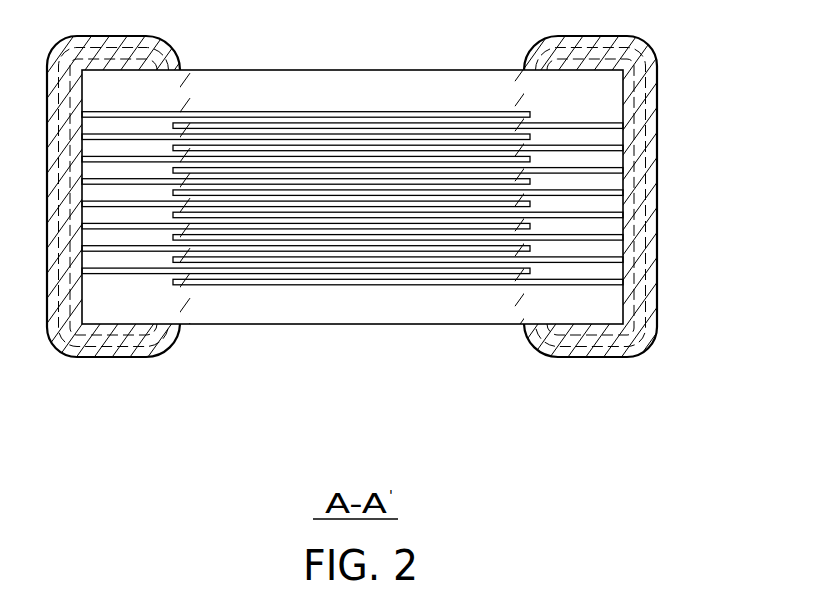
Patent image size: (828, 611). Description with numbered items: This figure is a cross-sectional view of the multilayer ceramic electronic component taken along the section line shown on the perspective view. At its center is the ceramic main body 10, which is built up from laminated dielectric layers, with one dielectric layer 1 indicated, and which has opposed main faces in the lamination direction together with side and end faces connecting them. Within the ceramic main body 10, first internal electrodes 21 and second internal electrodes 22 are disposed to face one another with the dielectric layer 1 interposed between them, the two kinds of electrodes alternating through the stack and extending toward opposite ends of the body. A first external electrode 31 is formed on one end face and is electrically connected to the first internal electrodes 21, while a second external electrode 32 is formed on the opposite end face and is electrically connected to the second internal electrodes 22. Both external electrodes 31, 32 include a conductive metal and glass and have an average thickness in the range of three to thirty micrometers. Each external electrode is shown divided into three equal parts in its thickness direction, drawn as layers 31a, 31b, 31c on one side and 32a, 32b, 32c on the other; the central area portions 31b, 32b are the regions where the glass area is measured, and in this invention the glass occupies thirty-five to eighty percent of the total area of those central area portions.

The dielectric layer 1 is at (593, 205).
The ceramic main body 10 is at (352, 324).
The first internal electrode 21 is at (577, 193).
The second internal electrode 22 is at (525, 227).
The first external electrode 31 is at (586, 278).
The first layer of first external electrode 31a is at (597, 328).
The central area portion of first external electrode 31b is at (583, 328).
The third layer of first external electrode 31c is at (572, 250).
The second external electrode 32 is at (115, 266).
The first layer of second external electrode 32a is at (107, 328).
The central area portion of second external electrode 32b is at (120, 328).
The third layer of second external electrode 32c is at (131, 250).